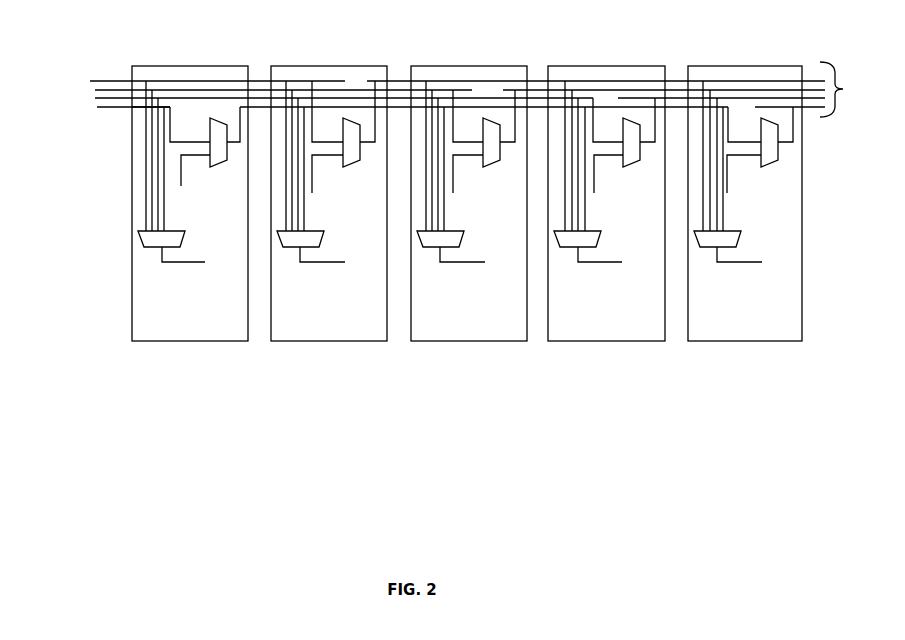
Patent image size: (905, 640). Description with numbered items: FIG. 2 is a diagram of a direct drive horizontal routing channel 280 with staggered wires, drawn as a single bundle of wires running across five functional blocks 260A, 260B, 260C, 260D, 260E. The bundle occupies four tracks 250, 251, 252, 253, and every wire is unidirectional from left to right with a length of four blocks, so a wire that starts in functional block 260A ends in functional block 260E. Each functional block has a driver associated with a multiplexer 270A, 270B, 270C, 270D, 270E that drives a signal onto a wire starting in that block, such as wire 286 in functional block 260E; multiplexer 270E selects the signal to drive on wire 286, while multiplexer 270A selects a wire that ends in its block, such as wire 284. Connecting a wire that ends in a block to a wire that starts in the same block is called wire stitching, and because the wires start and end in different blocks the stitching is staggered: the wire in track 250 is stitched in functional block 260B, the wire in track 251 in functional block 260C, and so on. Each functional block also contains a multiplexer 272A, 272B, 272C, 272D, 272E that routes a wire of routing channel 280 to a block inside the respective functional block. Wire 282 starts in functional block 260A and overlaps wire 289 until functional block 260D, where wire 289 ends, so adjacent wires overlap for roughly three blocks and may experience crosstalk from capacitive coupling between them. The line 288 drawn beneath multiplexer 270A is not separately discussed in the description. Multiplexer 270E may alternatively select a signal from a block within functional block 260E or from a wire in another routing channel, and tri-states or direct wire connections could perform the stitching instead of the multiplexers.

The track 250 is at (87, 77).
The track 251 is at (47, 86).
The track 252 is at (87, 94).
The track 253 is at (47, 103).
The direct drive horizontal routing channel 280 is at (849, 89).
The functional block 260A is at (188, 65).
The functional block 260B is at (327, 65).
The functional block 260C is at (467, 65).
The functional block 260D is at (605, 65).
The functional block 260E is at (744, 65).
The multiplexer 270A is at (223, 168).
The multiplexer 270B is at (357, 168).
The multiplexer 270C is at (497, 168).
The multiplexer 270D is at (637, 168).
The multiplexer 270E is at (775, 168).
The multiplexer 272A is at (185, 236).
The multiplexer 272B is at (324, 236).
The multiplexer 272C is at (464, 236).
The multiplexer 272D is at (601, 236).
The multiplexer 272E is at (741, 236).
The wire 282 is at (323, 108).
The wire 284 is at (171, 111).
The wire 286 is at (785, 106).
The select signal line 288 is at (181, 186).
The wire 289 is at (192, 101).